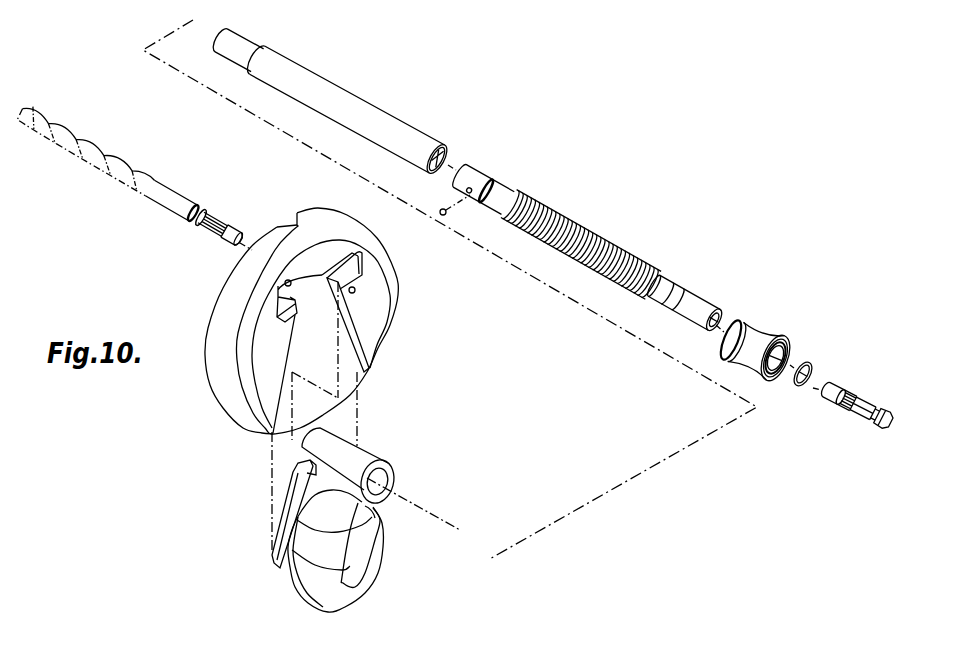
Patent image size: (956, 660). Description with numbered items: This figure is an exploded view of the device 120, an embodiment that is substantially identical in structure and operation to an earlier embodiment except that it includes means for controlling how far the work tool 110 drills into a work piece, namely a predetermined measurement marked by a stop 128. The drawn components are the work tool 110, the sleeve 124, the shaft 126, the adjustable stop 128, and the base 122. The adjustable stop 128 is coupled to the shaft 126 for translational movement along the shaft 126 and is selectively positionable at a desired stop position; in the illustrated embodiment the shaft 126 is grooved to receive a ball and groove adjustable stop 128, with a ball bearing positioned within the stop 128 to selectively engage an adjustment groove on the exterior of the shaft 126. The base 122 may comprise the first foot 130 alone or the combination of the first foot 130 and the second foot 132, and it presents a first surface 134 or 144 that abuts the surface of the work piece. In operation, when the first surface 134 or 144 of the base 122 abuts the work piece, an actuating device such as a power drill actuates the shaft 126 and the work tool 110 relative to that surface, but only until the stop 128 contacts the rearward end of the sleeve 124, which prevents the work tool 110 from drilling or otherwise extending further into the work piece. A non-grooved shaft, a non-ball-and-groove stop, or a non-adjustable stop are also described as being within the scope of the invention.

The work tool 110 is at (134, 168).
The device 120 is at (606, 110).
The base 122 is at (189, 476).
The sleeve 124 is at (355, 92).
The shaft 126 is at (598, 240).
The adjustable stop 128 is at (770, 326).
The first foot 130 is at (279, 578).
The second foot 132 is at (397, 291).
The first surface 134 is at (279, 514).
The first surface 144 is at (208, 332).